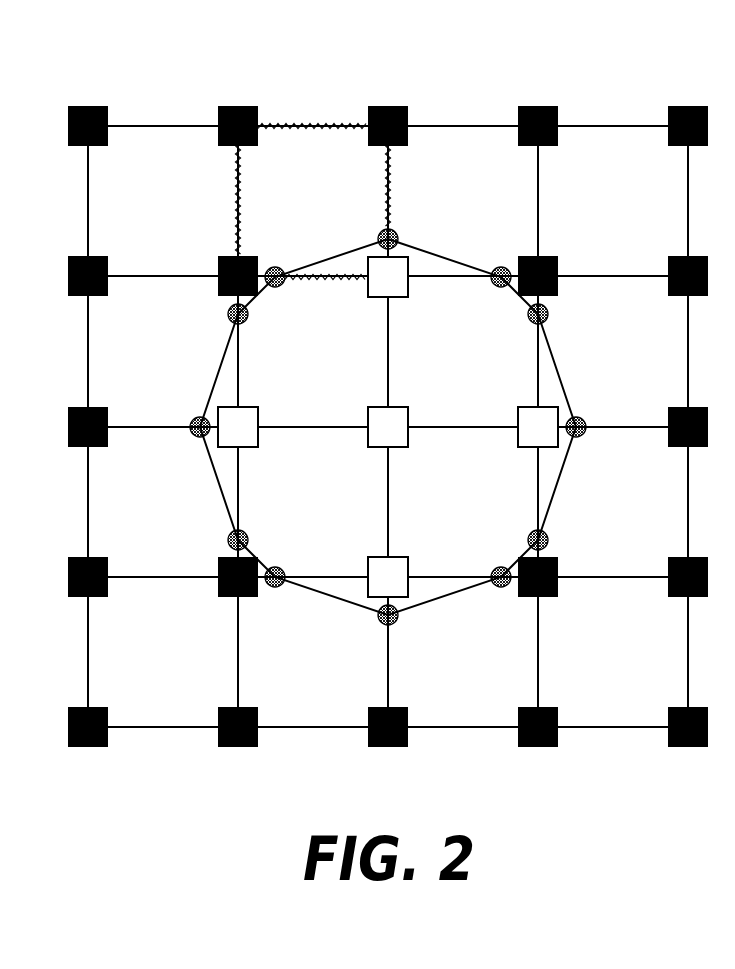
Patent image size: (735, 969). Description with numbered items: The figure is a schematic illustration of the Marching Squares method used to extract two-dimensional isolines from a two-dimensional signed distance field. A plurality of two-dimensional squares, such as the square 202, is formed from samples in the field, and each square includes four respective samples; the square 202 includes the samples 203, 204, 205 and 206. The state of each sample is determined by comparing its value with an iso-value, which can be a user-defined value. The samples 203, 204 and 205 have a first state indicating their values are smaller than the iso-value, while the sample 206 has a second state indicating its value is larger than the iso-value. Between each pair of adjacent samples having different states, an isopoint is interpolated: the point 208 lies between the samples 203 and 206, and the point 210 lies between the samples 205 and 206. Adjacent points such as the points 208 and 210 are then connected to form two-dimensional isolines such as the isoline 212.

The square 202 is at (336, 122).
The sample 203 is at (400, 106).
The sample 204 is at (229, 107).
The sample 205 is at (223, 257).
The sample 206 is at (392, 286).
The point 208 is at (395, 231).
The point 210 is at (276, 266).
The isoline 212 is at (345, 252).